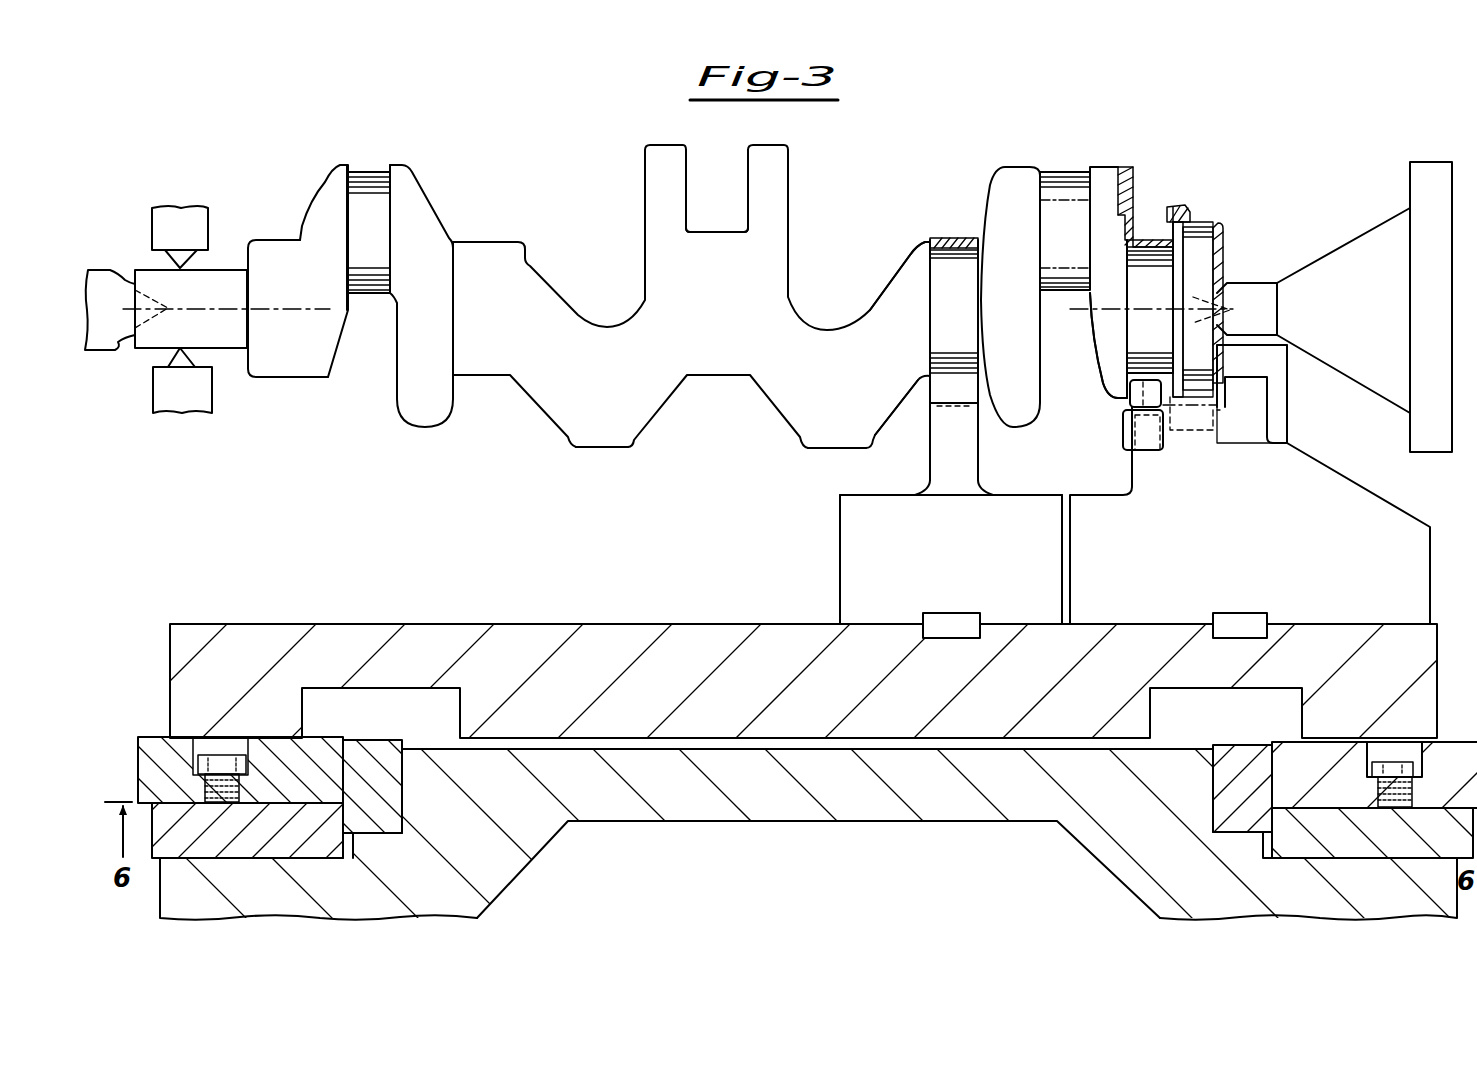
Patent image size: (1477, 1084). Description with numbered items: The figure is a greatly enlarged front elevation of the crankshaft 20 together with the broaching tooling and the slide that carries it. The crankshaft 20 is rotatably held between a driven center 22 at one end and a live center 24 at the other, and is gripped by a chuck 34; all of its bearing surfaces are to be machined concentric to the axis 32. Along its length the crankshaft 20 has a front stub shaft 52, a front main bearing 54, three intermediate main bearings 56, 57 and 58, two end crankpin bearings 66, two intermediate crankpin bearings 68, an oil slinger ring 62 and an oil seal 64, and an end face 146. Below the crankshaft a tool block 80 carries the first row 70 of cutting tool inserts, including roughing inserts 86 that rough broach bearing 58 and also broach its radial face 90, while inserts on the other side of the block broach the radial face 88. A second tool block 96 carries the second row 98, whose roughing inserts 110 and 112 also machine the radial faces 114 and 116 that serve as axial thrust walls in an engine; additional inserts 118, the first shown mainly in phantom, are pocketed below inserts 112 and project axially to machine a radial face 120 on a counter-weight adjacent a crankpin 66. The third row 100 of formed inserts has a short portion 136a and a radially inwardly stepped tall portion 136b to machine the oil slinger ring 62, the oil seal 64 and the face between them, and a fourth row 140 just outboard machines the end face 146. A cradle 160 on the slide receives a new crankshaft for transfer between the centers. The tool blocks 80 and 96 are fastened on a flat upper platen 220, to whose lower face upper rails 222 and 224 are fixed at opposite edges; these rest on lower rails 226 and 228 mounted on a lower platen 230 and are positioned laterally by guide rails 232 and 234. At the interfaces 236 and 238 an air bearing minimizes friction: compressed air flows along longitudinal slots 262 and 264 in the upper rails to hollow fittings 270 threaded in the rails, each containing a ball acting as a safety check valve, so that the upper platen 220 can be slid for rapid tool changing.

The crankshaft 20 is at (568, 452).
The driven center 22 is at (103, 268).
The live center 24 is at (1356, 318).
The axis 32 is at (265, 309).
The chuck 34 is at (186, 184).
The front stub shaft 52 is at (222, 272).
The front main bearing 54 is at (275, 240).
The second main bearing 56 is at (480, 242).
The third main bearing 57 is at (717, 232).
The fourth main bearing 58 is at (947, 240).
The oil slinger ring 62 is at (1203, 218).
The oil seal 64 is at (1212, 227).
The end crankpin bearings 66 is at (388, 140).
The intermediate crankpin bearings 68 is at (600, 447).
The first row of cutting tool inserts 70 is at (990, 497).
The tool block 80 is at (974, 562).
The roughing inserts 86 is at (940, 373).
The radial face 88 is at (970, 240).
The radial face 90 is at (932, 242).
The second tool block 96 is at (1430, 575).
The second row of cutting tool inserts 98 is at (1167, 513).
The third row of inserts 100 is at (1217, 513).
The roughing inserts 110 is at (1135, 355).
The roughing inserts 112 is at (1120, 392).
The radial face 114 is at (1167, 223).
The radial face 116 is at (1148, 240).
The additional inserts 118 is at (1123, 430).
The radial face 120 is at (1130, 170).
The short portion 136a is at (1170, 400).
The tall portion 136b is at (1281, 404).
The fourth row 140 is at (1270, 513).
The end face 146 is at (1223, 257).
The cradles 160 is at (1152, 238).
The upper platen 220 is at (1437, 672).
The upper rail 222 is at (1282, 777).
The upper rail 224 is at (140, 740).
The lower rail 226 is at (1345, 850).
The lower rail 228 is at (163, 847).
The lower platen 230 is at (700, 812).
The guide rail 232 is at (1220, 835).
The guide rail 234 is at (387, 813).
The interface 236 is at (1285, 830).
The interface 238 is at (180, 817).
The longitudinal slot 262 is at (1375, 745).
The longitudinal slot 264 is at (210, 750).
The hollow fittings 270 is at (224, 751).